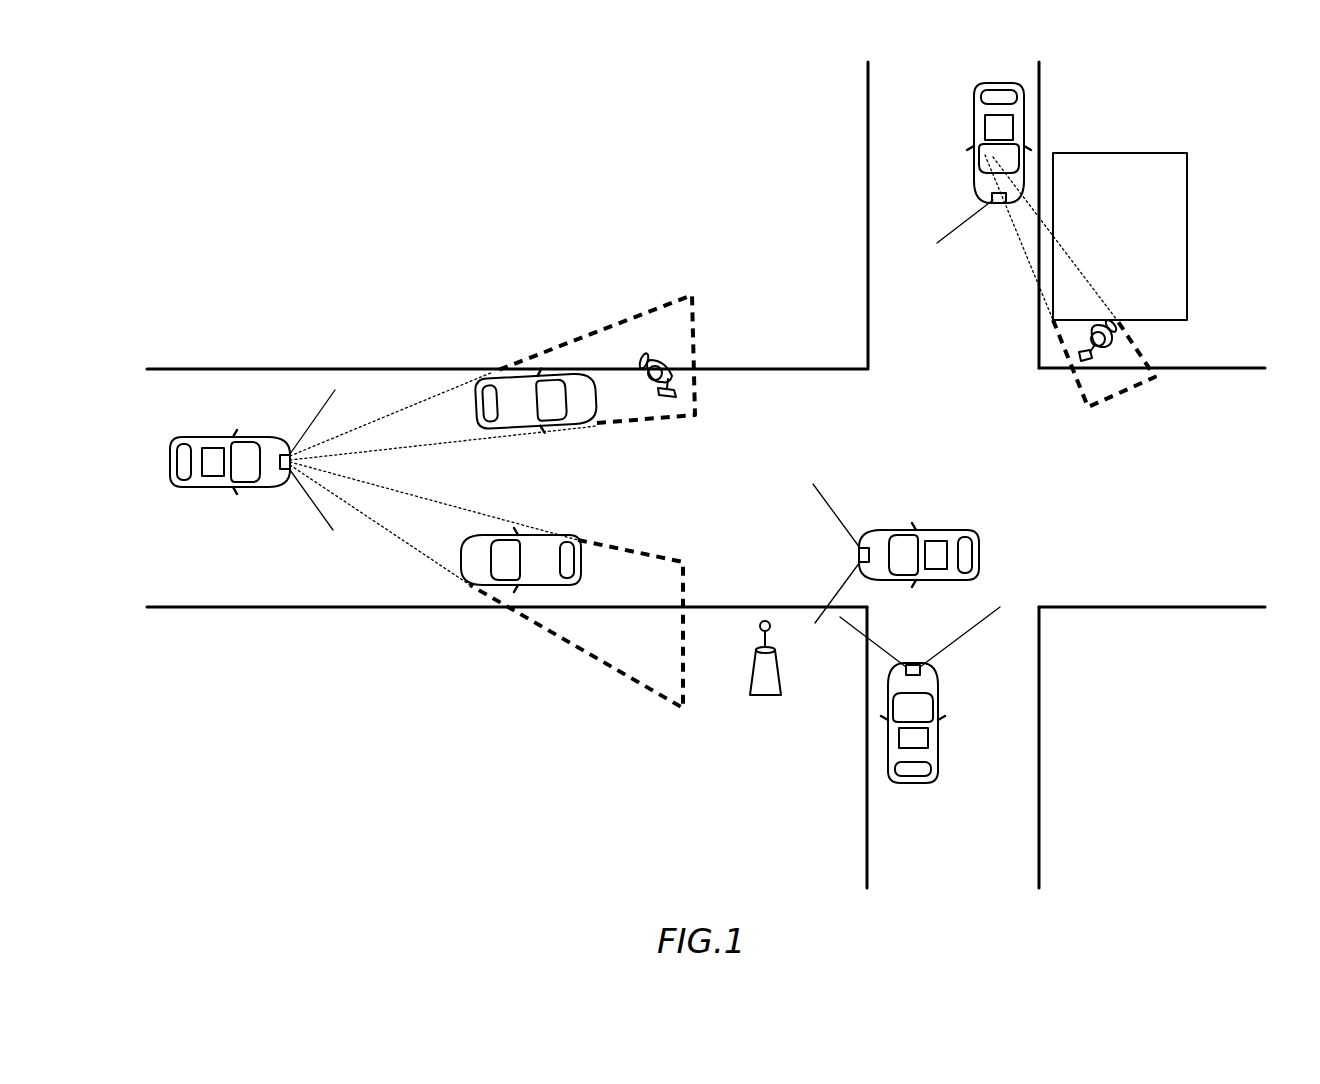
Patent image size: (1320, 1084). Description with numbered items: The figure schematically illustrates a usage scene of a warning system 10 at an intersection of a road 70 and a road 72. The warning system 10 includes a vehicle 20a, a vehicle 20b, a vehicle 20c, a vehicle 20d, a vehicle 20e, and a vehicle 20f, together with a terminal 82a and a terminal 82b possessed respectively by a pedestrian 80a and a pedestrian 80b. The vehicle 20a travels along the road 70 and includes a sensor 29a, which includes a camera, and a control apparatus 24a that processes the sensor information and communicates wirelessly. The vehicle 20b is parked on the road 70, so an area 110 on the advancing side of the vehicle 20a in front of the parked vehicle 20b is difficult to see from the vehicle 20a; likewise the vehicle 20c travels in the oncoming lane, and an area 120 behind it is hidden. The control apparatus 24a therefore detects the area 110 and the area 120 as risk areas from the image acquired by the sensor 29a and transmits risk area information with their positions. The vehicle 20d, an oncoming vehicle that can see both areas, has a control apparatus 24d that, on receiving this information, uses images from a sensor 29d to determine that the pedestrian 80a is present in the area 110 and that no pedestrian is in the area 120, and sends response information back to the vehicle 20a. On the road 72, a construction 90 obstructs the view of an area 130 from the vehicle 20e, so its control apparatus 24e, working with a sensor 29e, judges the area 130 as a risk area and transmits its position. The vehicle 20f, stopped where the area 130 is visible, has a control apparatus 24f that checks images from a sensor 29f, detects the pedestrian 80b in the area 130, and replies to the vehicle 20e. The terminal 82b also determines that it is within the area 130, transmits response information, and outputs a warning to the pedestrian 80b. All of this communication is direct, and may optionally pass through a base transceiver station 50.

The warning system 10 is at (1242, 81).
The vehicle 20a is at (171, 470).
The vehicle 20b is at (480, 425).
The vehicle 20c is at (581, 563).
The vehicle 20d is at (979, 563).
The vehicle 20e is at (972, 100).
The vehicle 20f is at (918, 781).
The control apparatus 24a is at (227, 488).
The control apparatus 24d is at (934, 541).
The control apparatus 24e is at (985, 128).
The control apparatus 24f is at (929, 736).
The sensor 29a is at (427, 478).
The sensor 29d is at (859, 551).
The sensor 29e is at (1000, 204).
The sensor 29f is at (913, 665).
The base transceiver station 50 is at (755, 648).
The road 70 is at (263, 594).
The road 72 is at (1028, 836).
The pedestrian 80a is at (668, 366).
The pedestrian 80b is at (1112, 345).
The terminal 82a is at (676, 397).
The terminal 82b is at (1081, 360).
The construction 90 is at (1153, 153).
The area 110 is at (693, 293).
The area 120 is at (622, 676).
The area 130 is at (1118, 396).